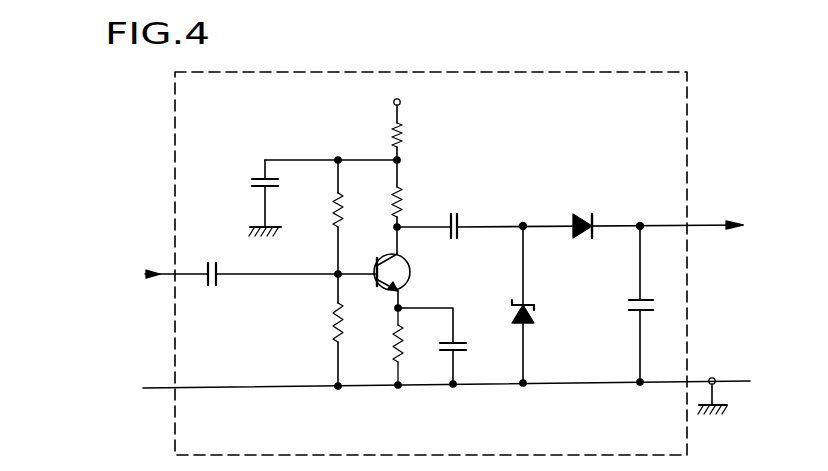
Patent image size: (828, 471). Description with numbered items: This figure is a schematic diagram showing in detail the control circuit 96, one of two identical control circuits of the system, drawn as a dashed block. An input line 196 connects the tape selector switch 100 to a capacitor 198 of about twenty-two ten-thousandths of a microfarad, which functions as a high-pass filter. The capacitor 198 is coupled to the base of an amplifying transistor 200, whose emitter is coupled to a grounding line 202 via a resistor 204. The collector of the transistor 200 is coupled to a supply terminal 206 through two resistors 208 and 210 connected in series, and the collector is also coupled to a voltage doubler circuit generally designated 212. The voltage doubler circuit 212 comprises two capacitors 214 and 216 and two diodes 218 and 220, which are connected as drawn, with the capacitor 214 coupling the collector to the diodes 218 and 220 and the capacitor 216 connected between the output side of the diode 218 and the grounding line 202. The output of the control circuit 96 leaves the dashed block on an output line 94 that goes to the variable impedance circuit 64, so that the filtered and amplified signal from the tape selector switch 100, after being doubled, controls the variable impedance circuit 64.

The control circuit 96 is at (362, 72).
The tape selector switch 100 is at (70, 267).
The input line 196 is at (160, 280).
The capacitor 198 is at (211, 286).
The amplifying transistor 200 is at (409, 262).
The grounding line 202 is at (279, 388).
The resistor 204 is at (392, 352).
The supply terminal 206 is at (400, 102).
The resistor 208 is at (402, 197).
The resistor 210 is at (402, 141).
The voltage doubler circuit 212 is at (526, 221).
The capacitor 214 is at (458, 216).
The capacitor 216 is at (633, 298).
The diode 218 is at (582, 216).
The diode 220 is at (517, 307).
The output line 94 is at (718, 226).
The variable impedance circuit 64 is at (754, 179).